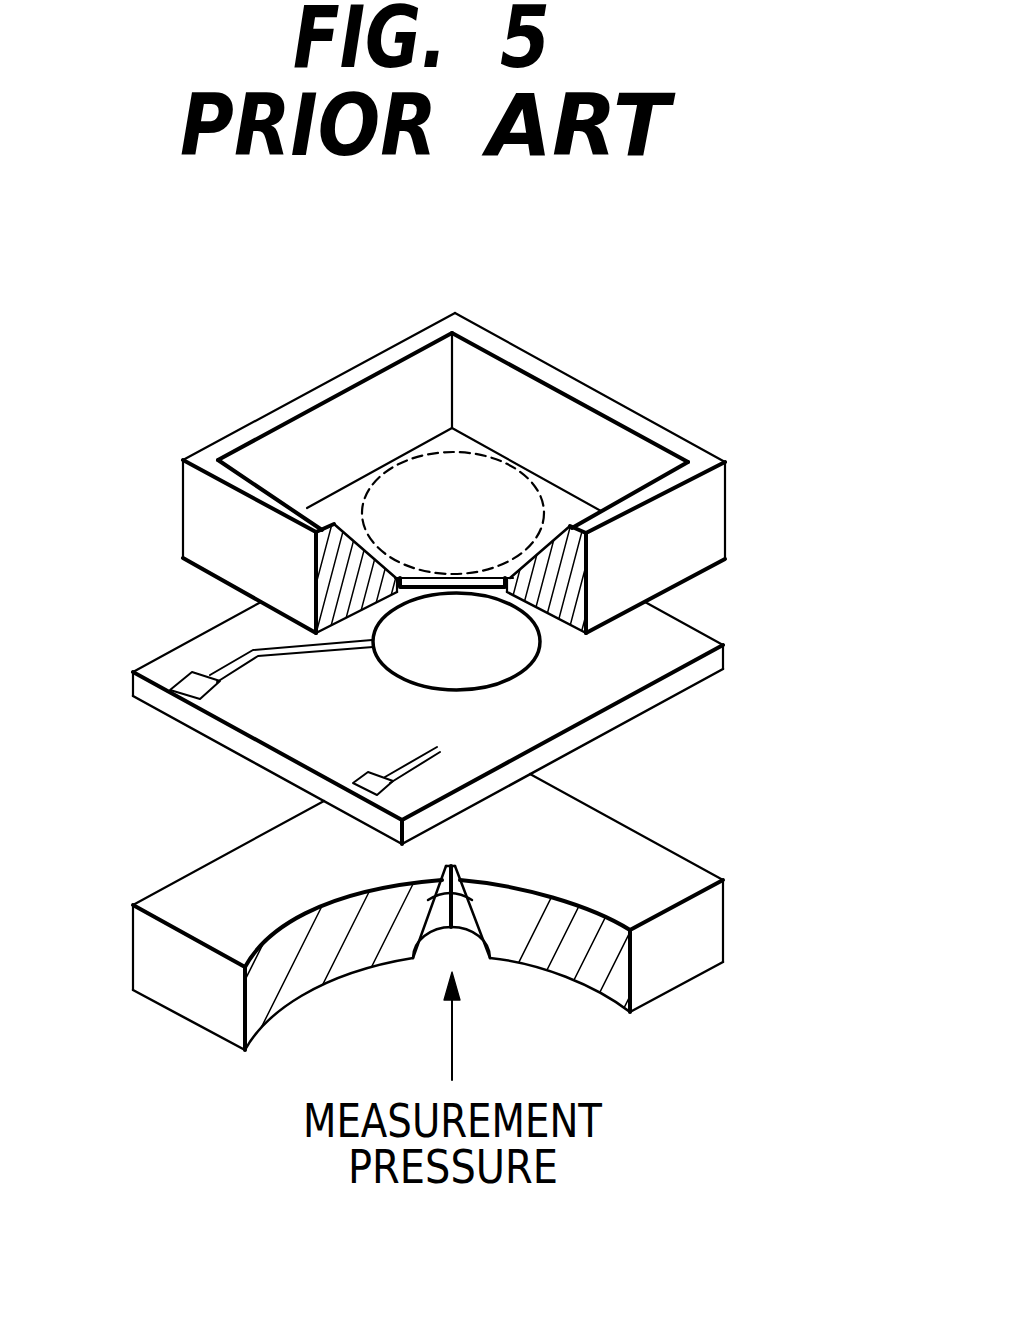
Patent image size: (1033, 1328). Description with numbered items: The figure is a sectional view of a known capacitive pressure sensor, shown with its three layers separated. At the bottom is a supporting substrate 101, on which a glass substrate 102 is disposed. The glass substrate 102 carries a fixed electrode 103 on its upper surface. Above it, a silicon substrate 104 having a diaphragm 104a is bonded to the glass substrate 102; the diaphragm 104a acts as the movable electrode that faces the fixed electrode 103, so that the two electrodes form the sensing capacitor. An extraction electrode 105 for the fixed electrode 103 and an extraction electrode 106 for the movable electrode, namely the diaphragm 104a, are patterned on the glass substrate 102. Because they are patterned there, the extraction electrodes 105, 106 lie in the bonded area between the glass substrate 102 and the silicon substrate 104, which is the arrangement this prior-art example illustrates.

The supporting substrate 101 is at (705, 928).
The glass substrate 102 is at (673, 642).
The fixed electrode 103 is at (480, 662).
The silicon substrate 104 is at (702, 515).
The diaphragm 104a is at (430, 505).
The extraction electrode 105 is at (188, 690).
The extraction electrode 106 is at (355, 787).